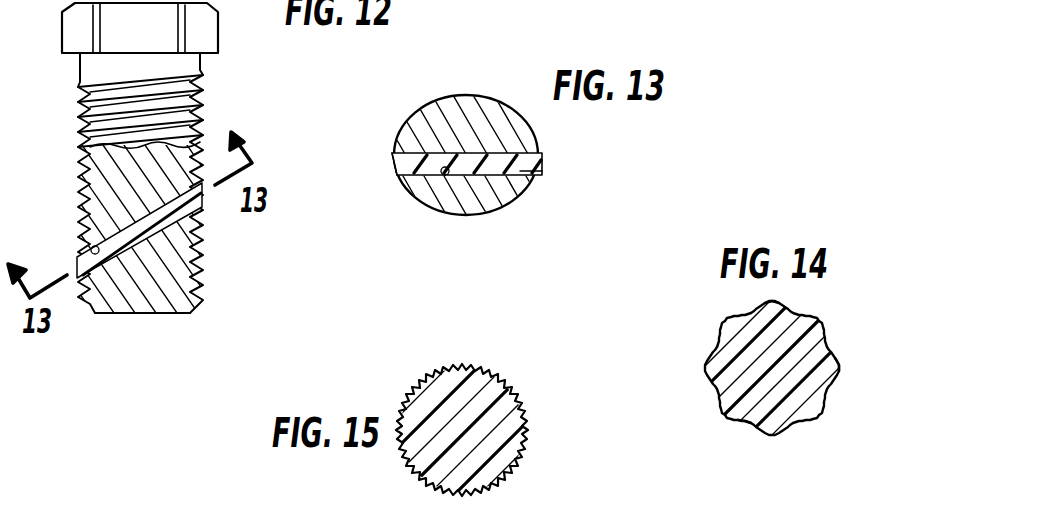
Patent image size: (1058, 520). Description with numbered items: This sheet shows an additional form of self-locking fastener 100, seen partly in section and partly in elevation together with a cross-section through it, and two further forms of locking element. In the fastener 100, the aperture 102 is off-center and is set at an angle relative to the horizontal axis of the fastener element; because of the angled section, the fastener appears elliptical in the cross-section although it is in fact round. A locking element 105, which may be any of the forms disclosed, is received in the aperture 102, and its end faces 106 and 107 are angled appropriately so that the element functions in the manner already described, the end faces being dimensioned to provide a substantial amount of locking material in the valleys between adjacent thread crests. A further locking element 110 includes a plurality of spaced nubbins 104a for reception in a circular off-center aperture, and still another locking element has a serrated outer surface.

In FIG. 12, the self-locking fastener 100 is at (240, 109).
In FIG. 13, the self-locking fastener 100 is at (503, 100).
In FIG. 12, the aperture 102 is at (87, 255).
In FIG. 13, the aperture 102 is at (443, 174).
In FIG. 14, the spaced nubbins 104a is at (774, 304).
In FIG. 12, the locking element 105 is at (173, 210).
In FIG. 13, the locking element 105 is at (540, 162).
In FIG. 13, the end face 106 is at (542, 170).
In FIG. 13, the end face 107 is at (395, 160).
In FIG. 14, the locking element 110 is at (782, 350).